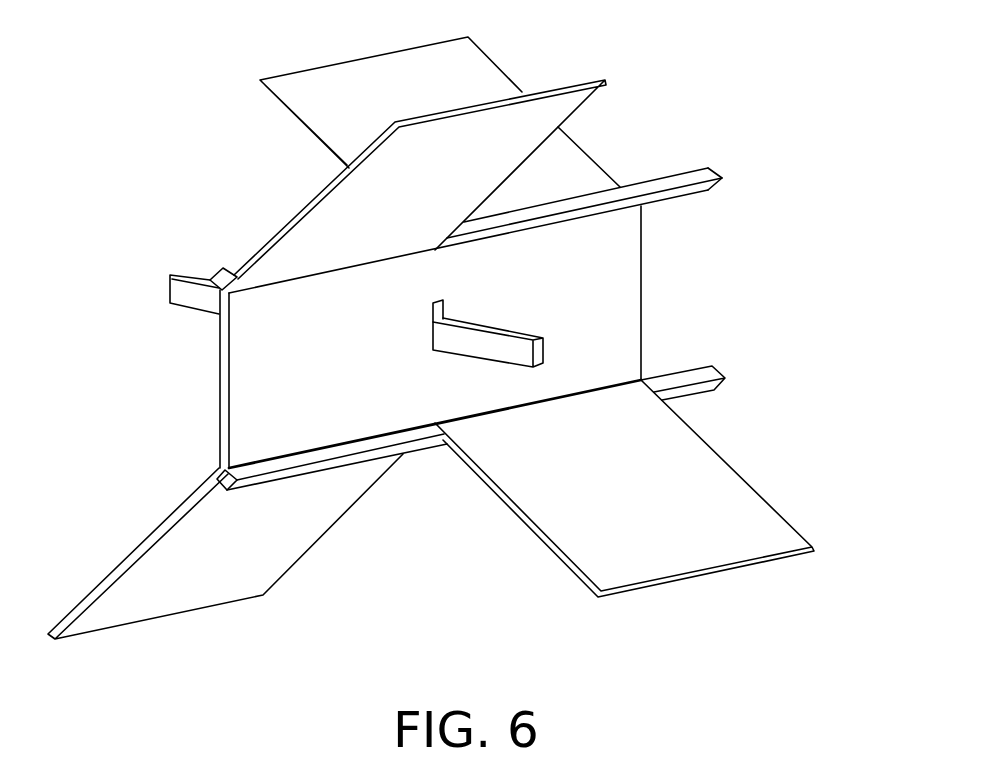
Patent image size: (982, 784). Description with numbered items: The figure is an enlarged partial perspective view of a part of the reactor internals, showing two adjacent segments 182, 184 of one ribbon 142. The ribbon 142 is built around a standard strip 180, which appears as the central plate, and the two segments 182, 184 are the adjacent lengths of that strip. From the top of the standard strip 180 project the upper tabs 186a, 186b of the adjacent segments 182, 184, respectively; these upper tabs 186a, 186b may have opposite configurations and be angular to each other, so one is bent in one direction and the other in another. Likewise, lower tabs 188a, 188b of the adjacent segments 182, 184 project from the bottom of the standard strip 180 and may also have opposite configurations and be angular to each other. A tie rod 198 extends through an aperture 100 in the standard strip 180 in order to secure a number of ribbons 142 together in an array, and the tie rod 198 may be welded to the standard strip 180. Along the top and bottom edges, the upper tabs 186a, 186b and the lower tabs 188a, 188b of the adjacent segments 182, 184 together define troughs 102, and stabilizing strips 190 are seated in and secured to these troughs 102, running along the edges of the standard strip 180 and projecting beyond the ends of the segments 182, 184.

The aperture 100 is at (438, 298).
The trough 102 is at (633, 170).
The ribbon 142 is at (675, 294).
The standard strip 180 is at (363, 356).
The segment 182 is at (268, 377).
The segment 184 is at (618, 253).
The upper tab 186a is at (347, 212).
The upper tab 186b is at (573, 153).
The lower tab 188a is at (245, 558).
The lower tab 188b is at (720, 485).
The stabilizing strip 190 is at (723, 175).
The tie rod 198 is at (508, 335).